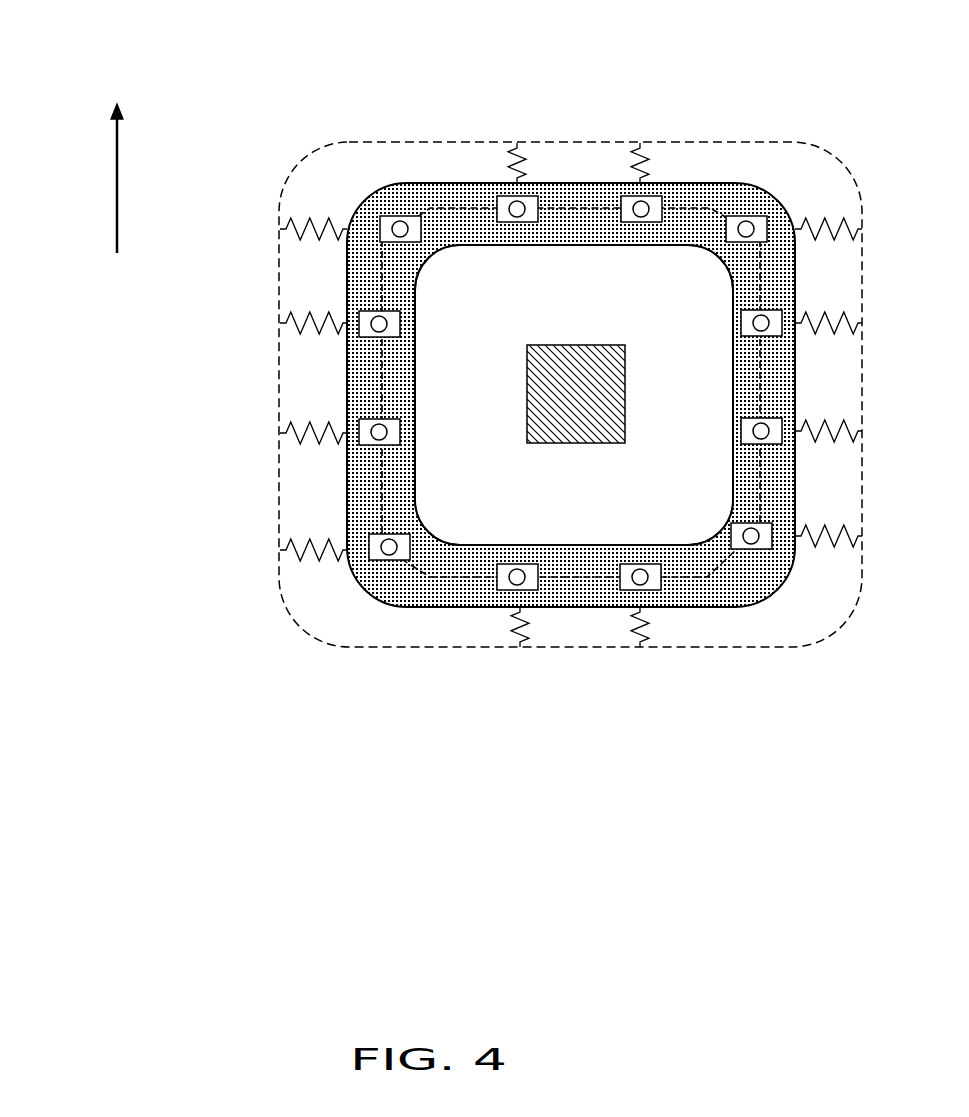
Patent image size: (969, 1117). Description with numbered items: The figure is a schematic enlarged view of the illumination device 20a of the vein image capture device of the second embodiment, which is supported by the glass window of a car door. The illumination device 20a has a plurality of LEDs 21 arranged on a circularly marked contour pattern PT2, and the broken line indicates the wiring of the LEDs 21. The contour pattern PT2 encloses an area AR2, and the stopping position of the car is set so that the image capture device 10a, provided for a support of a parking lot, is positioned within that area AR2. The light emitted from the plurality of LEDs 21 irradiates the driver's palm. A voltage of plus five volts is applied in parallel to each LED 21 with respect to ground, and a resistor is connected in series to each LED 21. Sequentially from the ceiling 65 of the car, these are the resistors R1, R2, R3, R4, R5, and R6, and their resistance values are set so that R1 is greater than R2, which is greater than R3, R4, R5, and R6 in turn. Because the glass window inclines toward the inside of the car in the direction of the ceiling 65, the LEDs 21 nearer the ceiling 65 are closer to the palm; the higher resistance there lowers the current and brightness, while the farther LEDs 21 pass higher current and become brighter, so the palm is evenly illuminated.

The illumination device 20a is at (587, 86).
The image capture device 10a is at (540, 385).
The LED 21 is at (352, 455).
The contour pattern PT2 is at (367, 588).
The area AR2 is at (677, 523).
The ceiling 65 is at (117, 131).
The resistor R1 is at (555, 163).
The resistor R2 is at (571, 211).
The resistor R3 is at (571, 306).
The resistor R4 is at (571, 413).
The resistor R5 is at (571, 527).
The resistor R6 is at (578, 627).